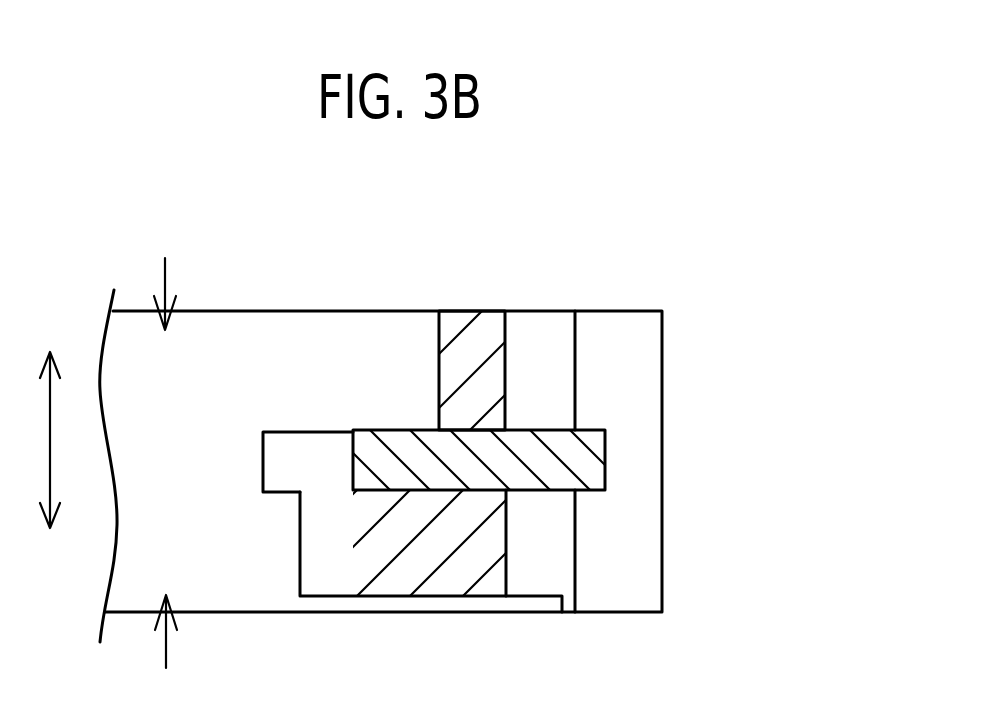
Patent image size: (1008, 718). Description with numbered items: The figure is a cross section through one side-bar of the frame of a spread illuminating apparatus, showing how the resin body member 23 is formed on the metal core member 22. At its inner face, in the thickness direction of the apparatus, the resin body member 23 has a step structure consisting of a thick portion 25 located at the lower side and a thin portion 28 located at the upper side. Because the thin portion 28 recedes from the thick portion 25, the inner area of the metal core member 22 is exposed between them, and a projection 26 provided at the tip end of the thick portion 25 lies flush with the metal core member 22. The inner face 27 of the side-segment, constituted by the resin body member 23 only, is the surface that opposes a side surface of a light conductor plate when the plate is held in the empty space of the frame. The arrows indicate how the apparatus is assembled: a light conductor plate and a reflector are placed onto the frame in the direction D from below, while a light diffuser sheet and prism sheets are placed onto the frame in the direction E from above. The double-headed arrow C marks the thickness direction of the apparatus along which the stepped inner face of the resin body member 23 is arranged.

The metal core member 22 is at (573, 457).
The resin body member 23 is at (530, 311).
The thick portion 25 is at (390, 580).
The projection 26 is at (273, 455).
The inner face 27 is at (297, 570).
The thin portion 28 is at (472, 330).
The direction E is at (164, 265).
The direction D is at (166, 656).
The direction C is at (50, 468).